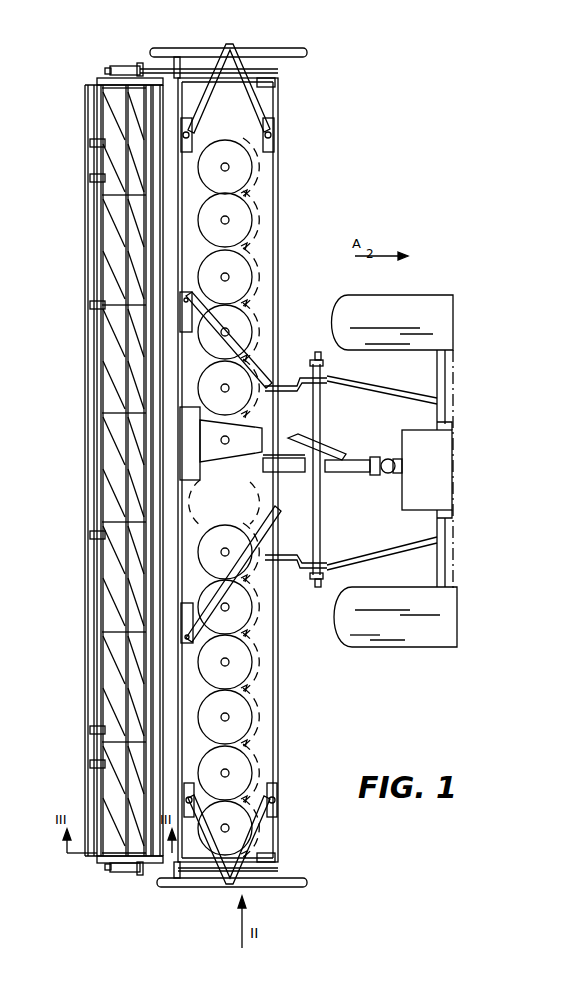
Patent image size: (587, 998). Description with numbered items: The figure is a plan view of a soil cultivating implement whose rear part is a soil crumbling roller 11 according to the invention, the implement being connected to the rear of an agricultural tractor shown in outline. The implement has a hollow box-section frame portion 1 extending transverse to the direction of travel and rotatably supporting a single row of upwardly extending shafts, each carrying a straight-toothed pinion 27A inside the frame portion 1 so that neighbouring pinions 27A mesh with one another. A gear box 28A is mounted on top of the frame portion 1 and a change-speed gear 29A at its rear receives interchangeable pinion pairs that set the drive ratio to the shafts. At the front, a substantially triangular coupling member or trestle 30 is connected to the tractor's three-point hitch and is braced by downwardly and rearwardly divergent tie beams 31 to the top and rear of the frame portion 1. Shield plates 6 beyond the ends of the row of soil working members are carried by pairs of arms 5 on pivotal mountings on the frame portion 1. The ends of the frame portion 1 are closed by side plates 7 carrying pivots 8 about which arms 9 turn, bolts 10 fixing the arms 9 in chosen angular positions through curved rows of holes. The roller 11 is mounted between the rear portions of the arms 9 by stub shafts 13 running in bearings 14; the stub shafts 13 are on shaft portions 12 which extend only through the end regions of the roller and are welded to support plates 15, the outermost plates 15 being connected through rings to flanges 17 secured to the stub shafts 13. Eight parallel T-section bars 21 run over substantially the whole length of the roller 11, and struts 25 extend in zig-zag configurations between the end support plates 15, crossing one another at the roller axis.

The hollow box-section frame portion 1 is at (278, 240).
The arms 5 is at (228, 48).
The shield plates 6 is at (276, 50).
The side plates 7 is at (274, 87).
The pivots 8 is at (278, 72).
The arms 9 is at (139, 64).
The bolts 10 is at (182, 58).
The soil crumbling roller 11 is at (80, 346).
The shaft portions 12 is at (90, 178).
The stub shafts 13 is at (122, 66).
The bearings 14 is at (105, 70).
The support plates 15 is at (90, 305).
The flanges 17 is at (96, 82).
The T-section bars 21 is at (90, 143).
The struts 25 is at (118, 256).
The pinions 27A is at (278, 297).
The gear box 28A is at (224, 502).
The change-speed gear 29A is at (205, 478).
The coupling member or trestle 30 is at (312, 526).
The tie beams 31 is at (272, 351).